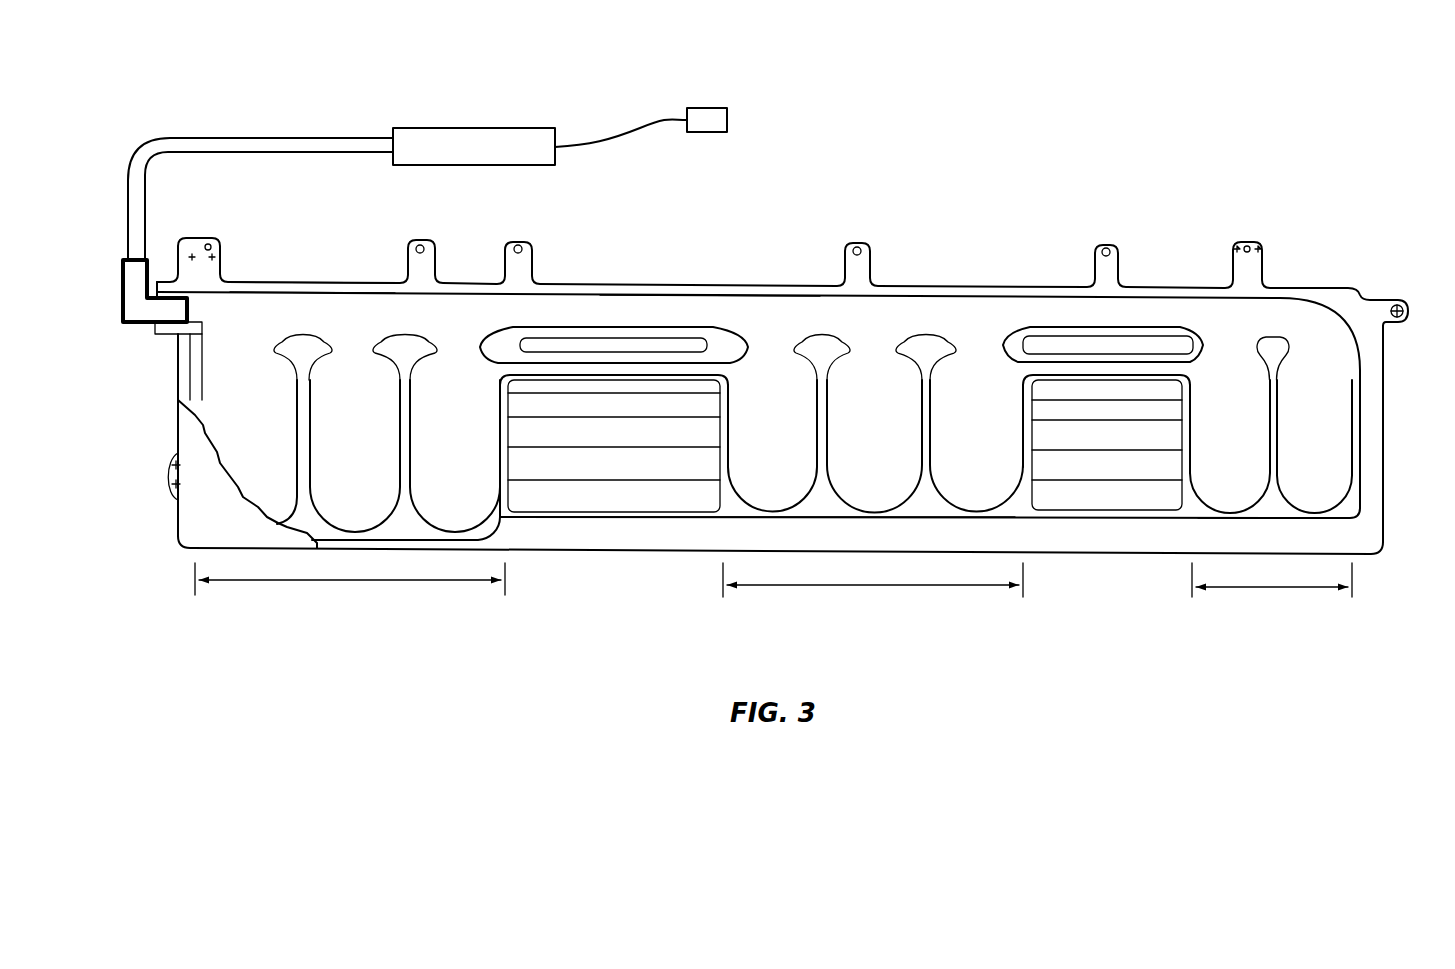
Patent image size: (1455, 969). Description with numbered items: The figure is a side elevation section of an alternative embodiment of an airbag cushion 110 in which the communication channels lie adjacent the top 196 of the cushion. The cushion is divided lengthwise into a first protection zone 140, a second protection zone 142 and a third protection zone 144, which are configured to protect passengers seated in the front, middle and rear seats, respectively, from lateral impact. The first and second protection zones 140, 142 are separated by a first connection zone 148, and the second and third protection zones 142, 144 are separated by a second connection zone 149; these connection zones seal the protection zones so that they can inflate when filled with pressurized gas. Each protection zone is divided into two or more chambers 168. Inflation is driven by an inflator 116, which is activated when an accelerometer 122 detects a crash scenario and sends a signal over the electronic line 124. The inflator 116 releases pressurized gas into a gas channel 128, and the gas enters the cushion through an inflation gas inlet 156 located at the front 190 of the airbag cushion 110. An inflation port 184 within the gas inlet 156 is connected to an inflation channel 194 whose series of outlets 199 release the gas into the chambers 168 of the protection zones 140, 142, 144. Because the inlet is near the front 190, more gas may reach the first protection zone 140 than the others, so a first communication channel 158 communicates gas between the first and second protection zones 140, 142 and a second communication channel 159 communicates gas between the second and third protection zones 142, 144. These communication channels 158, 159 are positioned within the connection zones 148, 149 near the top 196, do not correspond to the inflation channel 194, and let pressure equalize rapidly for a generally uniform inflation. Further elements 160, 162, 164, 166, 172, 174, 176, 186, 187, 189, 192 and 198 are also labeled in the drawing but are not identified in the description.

The airbag cushion 110 is at (583, 614).
The inflator 116 is at (482, 140).
The accelerometer 122 is at (708, 110).
The electronic line 124 is at (628, 127).
The gas channel 128 is at (290, 137).
The first protection zone 140 is at (370, 556).
The second protection zone 142 is at (847, 562).
The third protection zone 144 is at (1237, 562).
The first connection zone 148 is at (602, 443).
The second connection zone 149 is at (1092, 443).
The inflation gas inlet 156 is at (152, 270).
The first communication channel 158 is at (577, 373).
The second communication channel 159 is at (1078, 368).
The base layer 160 is at (328, 308).
The torn region 162 is at (230, 538).
The top layer 164 is at (260, 281).
The inner pocket 166 is at (334, 477).
The chambers 168 is at (231, 443).
The first width 172 is at (283, 581).
The second width 174 is at (893, 588).
The third width 176 is at (1277, 589).
The inflation port 184 is at (180, 308).
The tab 186 is at (193, 240).
The hole 187 is at (867, 250).
The alignment mark 189 is at (213, 246).
The front 190 is at (176, 377).
The side edge 192 is at (1390, 373).
The inflation channel 194 is at (297, 300).
The top 196 is at (707, 290).
The bottom edge 198 is at (657, 553).
The outlets 199 is at (245, 354).